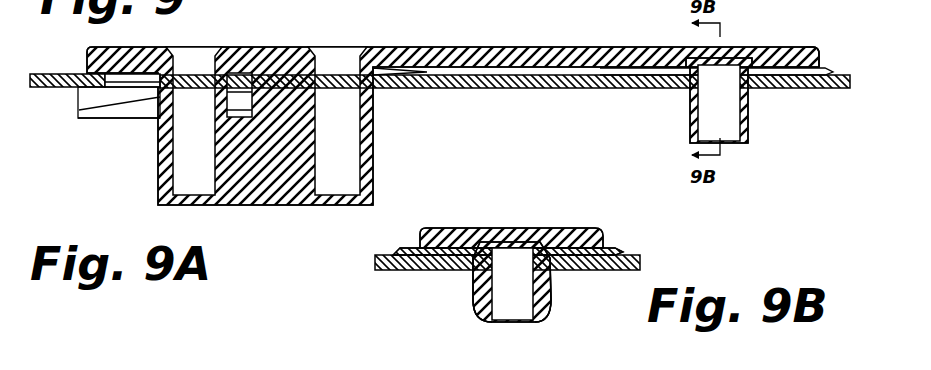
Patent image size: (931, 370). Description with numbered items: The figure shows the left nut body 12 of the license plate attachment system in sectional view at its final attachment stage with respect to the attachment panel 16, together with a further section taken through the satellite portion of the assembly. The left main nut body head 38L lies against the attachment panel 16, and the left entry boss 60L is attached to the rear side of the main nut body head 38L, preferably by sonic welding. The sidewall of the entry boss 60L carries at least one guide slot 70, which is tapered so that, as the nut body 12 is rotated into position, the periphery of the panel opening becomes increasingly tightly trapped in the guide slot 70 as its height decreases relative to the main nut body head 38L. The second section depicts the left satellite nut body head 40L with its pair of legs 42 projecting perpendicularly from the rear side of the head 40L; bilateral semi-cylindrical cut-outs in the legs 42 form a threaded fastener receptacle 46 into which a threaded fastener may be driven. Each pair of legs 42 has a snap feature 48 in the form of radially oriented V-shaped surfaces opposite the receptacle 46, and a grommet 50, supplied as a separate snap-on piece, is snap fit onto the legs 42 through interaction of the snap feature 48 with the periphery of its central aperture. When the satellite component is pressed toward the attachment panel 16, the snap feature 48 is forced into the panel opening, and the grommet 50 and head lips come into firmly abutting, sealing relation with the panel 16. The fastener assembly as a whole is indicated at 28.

In FIG. 9A, the left nut body 12 is at (501, 44).
In FIG. 9A, the attachment panel 16 is at (508, 91).
In FIG. 9B, the attachment panel 16 is at (636, 256).
In FIG. 9A, the fastener assembly 28 is at (731, 44).
In FIG. 9A, the left main nut body head 38L is at (272, 48).
In FIG. 9A, the left satellite nut body head 40L is at (806, 58).
In FIG. 9B, the left satellite nut body head 40L is at (558, 229).
In FIG. 9B, the legs 42 is at (558, 310).
In FIG. 9A, the threaded fastener receptacle 46 is at (732, 104).
In FIG. 9B, the snap feature 48 is at (473, 283).
In FIG. 9B, the grommet 50 is at (607, 249).
In FIG. 9A, the left entry boss 60L is at (137, 118).
In FIG. 9A, the guide slot 70 is at (122, 88).